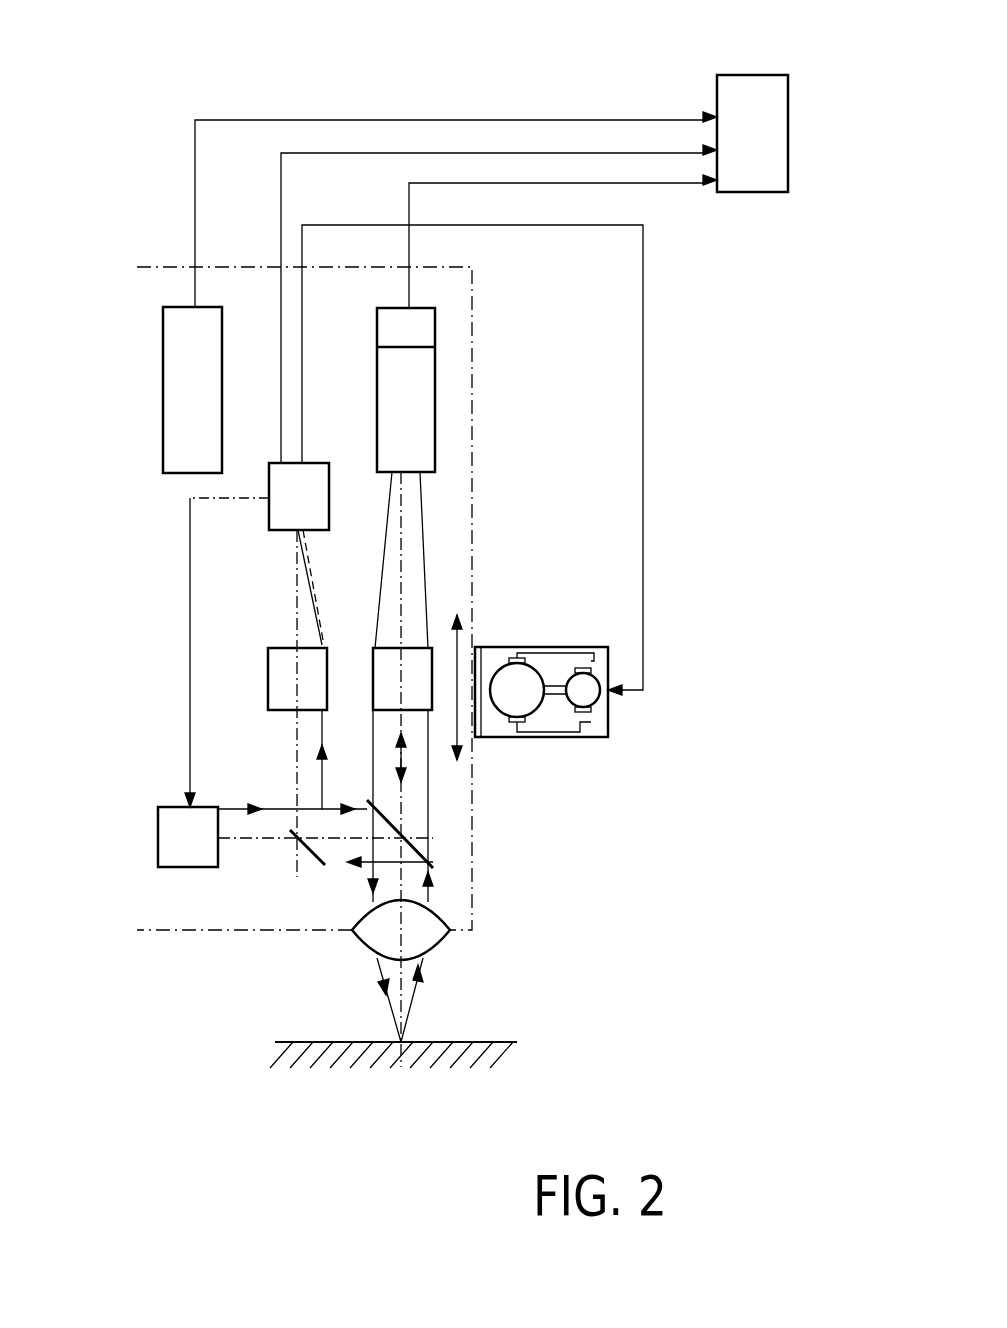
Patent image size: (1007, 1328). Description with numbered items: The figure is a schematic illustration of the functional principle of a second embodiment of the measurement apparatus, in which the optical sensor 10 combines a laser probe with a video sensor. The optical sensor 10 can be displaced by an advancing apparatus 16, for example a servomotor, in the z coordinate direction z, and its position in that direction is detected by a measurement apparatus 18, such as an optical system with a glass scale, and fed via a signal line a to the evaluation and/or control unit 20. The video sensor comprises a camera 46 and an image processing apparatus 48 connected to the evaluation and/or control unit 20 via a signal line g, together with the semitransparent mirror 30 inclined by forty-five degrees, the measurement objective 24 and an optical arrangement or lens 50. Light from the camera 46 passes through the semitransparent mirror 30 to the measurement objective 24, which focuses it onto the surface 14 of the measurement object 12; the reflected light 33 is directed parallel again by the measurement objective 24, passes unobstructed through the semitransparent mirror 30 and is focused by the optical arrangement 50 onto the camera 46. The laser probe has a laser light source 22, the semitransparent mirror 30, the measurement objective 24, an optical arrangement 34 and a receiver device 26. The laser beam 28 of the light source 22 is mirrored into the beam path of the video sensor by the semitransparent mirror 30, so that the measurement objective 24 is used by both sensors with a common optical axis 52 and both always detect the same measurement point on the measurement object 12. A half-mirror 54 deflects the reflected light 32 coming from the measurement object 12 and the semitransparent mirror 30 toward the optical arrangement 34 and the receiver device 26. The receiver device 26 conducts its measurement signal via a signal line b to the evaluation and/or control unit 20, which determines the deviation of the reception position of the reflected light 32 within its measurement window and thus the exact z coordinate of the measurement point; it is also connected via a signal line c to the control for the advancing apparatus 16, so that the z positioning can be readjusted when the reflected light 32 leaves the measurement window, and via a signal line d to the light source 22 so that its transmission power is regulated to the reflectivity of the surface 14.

The optical sensor 10 is at (166, 262).
The measurement object 12 is at (330, 1058).
The surface 14 is at (440, 1042).
The advancing apparatus 16 is at (572, 738).
The measurement apparatus 18 is at (183, 348).
The evaluation and/or control unit 20 is at (728, 96).
The light source 22 is at (180, 830).
The measurement objective 24 is at (443, 945).
The receiver device 26 is at (269, 467).
The laser beam 28 is at (232, 800).
The semitransparent mirror 30 is at (432, 865).
The reflected light 32 is at (310, 582).
The reflected light 33 is at (423, 540).
The optical arrangement 34 is at (278, 662).
The camera 46 is at (408, 392).
The image processing apparatus 48 is at (395, 323).
The optical arrangement 50 is at (420, 663).
The common optical axis 52 is at (400, 818).
The half-mirror 54 is at (325, 868).
The signal line a is at (450, 120).
The signal line b is at (513, 152).
The signal line c is at (644, 370).
The signal line d is at (190, 668).
The signal line g is at (563, 182).
The z coordinate direction z is at (455, 740).